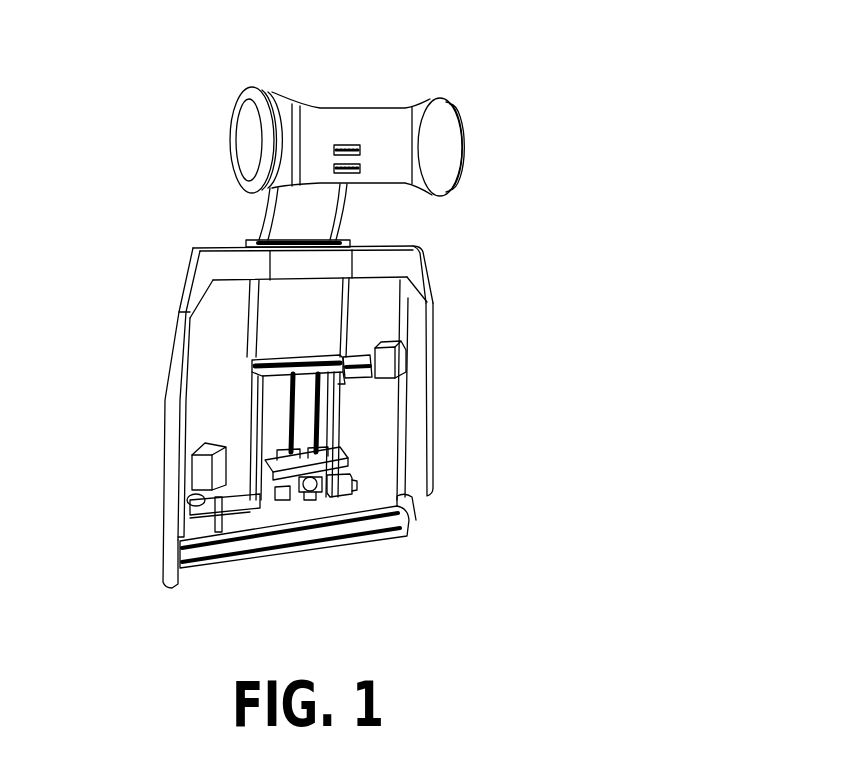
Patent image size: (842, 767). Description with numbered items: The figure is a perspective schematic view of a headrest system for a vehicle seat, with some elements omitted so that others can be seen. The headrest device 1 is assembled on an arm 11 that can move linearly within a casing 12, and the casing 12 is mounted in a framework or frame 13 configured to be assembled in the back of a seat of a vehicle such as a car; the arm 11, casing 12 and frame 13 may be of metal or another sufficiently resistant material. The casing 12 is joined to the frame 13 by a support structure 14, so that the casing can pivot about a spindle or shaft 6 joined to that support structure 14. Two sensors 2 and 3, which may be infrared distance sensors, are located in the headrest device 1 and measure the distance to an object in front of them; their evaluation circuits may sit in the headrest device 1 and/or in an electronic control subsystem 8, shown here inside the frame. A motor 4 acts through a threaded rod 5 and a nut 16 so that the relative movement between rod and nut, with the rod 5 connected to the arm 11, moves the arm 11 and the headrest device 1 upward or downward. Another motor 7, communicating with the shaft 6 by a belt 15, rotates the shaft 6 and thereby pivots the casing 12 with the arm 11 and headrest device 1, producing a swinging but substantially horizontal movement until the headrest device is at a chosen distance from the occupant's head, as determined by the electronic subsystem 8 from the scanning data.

The headrest device 1 is at (325, 115).
The sensor 2 is at (356, 173).
The sensor 3 is at (349, 145).
The motor 4 is at (403, 523).
The threaded rod 5 is at (347, 490).
The shaft 6 is at (247, 370).
The motor 7 is at (240, 513).
The electronic control subsystem 8 is at (207, 484).
The arm 11 is at (285, 213).
The casing 12 is at (255, 241).
The frame 13 is at (168, 463).
The support structure 14 is at (327, 408).
The belt 15 is at (268, 470).
The nut 16 is at (297, 480).